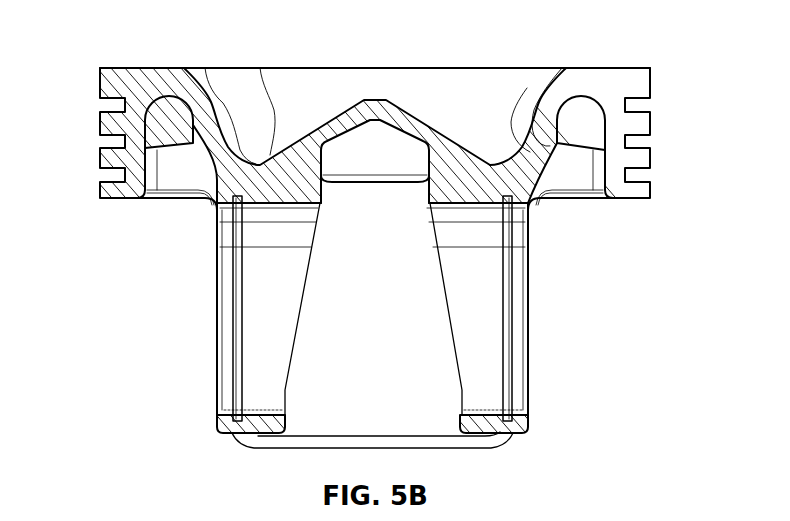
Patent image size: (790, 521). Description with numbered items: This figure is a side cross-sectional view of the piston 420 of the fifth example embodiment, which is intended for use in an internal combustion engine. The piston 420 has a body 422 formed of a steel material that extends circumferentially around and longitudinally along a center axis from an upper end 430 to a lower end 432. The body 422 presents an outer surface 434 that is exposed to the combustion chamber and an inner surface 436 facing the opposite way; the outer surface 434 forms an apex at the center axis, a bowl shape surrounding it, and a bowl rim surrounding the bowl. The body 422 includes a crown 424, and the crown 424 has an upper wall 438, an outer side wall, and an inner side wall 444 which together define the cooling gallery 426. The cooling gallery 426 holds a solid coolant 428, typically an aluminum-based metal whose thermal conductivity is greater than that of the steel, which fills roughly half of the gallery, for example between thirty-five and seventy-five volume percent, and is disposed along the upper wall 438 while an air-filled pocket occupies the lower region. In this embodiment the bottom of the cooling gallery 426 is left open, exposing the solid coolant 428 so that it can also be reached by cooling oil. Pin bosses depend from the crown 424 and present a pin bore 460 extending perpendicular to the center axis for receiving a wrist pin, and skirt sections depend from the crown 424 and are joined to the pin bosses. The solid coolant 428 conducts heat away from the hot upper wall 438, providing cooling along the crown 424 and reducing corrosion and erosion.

The piston 420 is at (395, 246).
The body 422 is at (369, 335).
The crown 424 is at (395, 228).
The cooling gallery 426 is at (190, 120).
The solid coolant 428 is at (145, 138).
The upper end 430 is at (580, 67).
The lower end 432 is at (521, 434).
The outer surface 434 is at (327, 121).
The inner surface 436 is at (422, 155).
The upper wall 438 is at (166, 82).
The inner side wall 444 is at (538, 146).
The pin bore 460 is at (489, 197).